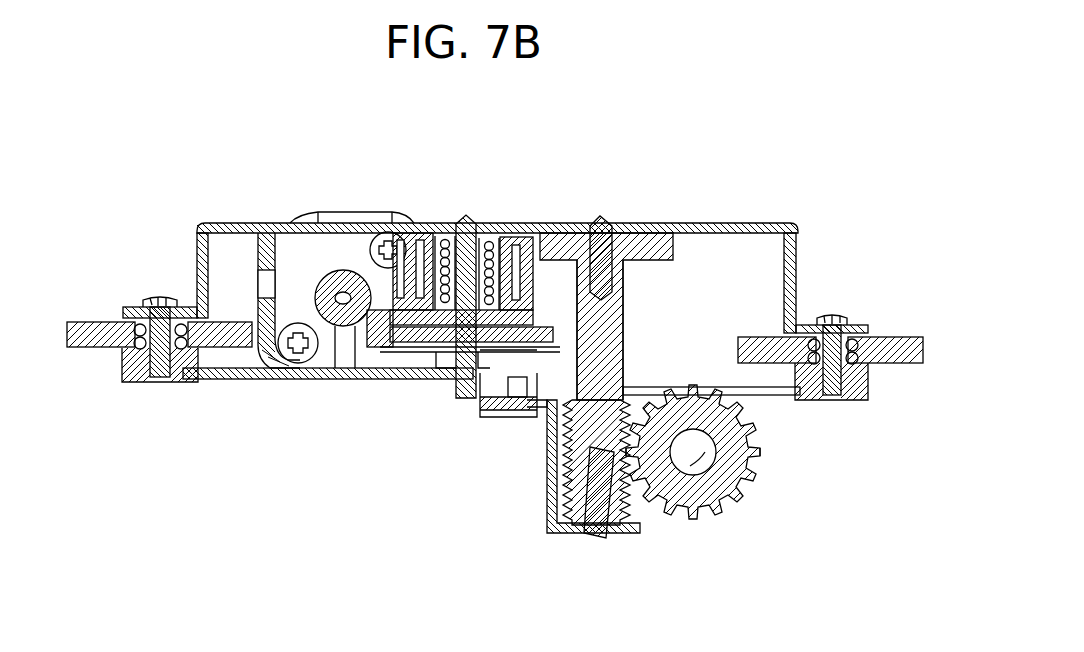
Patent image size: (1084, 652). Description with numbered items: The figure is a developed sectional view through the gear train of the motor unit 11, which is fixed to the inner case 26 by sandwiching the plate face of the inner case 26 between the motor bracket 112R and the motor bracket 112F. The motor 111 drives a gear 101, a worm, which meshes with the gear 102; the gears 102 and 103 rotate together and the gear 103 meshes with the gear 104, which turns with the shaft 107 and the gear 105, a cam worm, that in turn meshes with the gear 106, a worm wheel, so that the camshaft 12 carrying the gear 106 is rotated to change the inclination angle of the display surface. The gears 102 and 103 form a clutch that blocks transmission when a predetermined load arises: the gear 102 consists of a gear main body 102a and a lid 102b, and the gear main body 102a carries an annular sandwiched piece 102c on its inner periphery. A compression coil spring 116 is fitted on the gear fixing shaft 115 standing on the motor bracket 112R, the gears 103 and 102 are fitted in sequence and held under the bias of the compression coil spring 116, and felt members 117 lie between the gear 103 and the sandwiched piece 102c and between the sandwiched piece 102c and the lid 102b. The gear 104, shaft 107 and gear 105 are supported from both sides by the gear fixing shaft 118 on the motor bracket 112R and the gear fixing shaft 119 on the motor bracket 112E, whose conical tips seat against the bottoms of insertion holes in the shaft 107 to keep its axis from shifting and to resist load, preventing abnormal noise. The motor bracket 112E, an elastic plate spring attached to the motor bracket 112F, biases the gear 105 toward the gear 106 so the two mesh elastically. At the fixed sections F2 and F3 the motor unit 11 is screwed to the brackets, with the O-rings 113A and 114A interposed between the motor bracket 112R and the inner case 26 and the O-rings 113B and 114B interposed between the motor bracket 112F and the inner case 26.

The motor unit 11 is at (745, 180).
The camshaft 12 is at (745, 455).
The inner case 26 is at (82, 350).
The gear (worm) 101 is at (345, 380).
The gear (clutch gear) 102 is at (537, 412).
The gear main body 102a is at (395, 380).
The lid 102b is at (425, 380).
The annular sandwiched piece 102c is at (540, 232).
The gear (clutch gear) 103 is at (405, 233).
The gear 104 is at (650, 233).
The gear (cam worm) 105 is at (620, 527).
The gear (worm wheel) 106 is at (700, 509).
The shaft 107 is at (628, 325).
The motor 111 is at (343, 220).
The motor bracket 112R is at (250, 223).
The motor bracket 112F is at (258, 380).
The motor bracket 112E is at (547, 520).
The O-ring 113A is at (132, 325).
The O-ring 113B is at (148, 385).
The O-ring 114A is at (856, 345).
The O-ring 114B is at (850, 402).
The gear fixing shaft 115 is at (460, 218).
The compression coil spring 116 is at (490, 236).
The felt member 117 is at (436, 352).
The gear fixing shaft 118 is at (590, 540).
The gear fixing shaft 119 is at (598, 222).
The fixed section F2 is at (840, 306).
The fixed section F3 is at (167, 297).